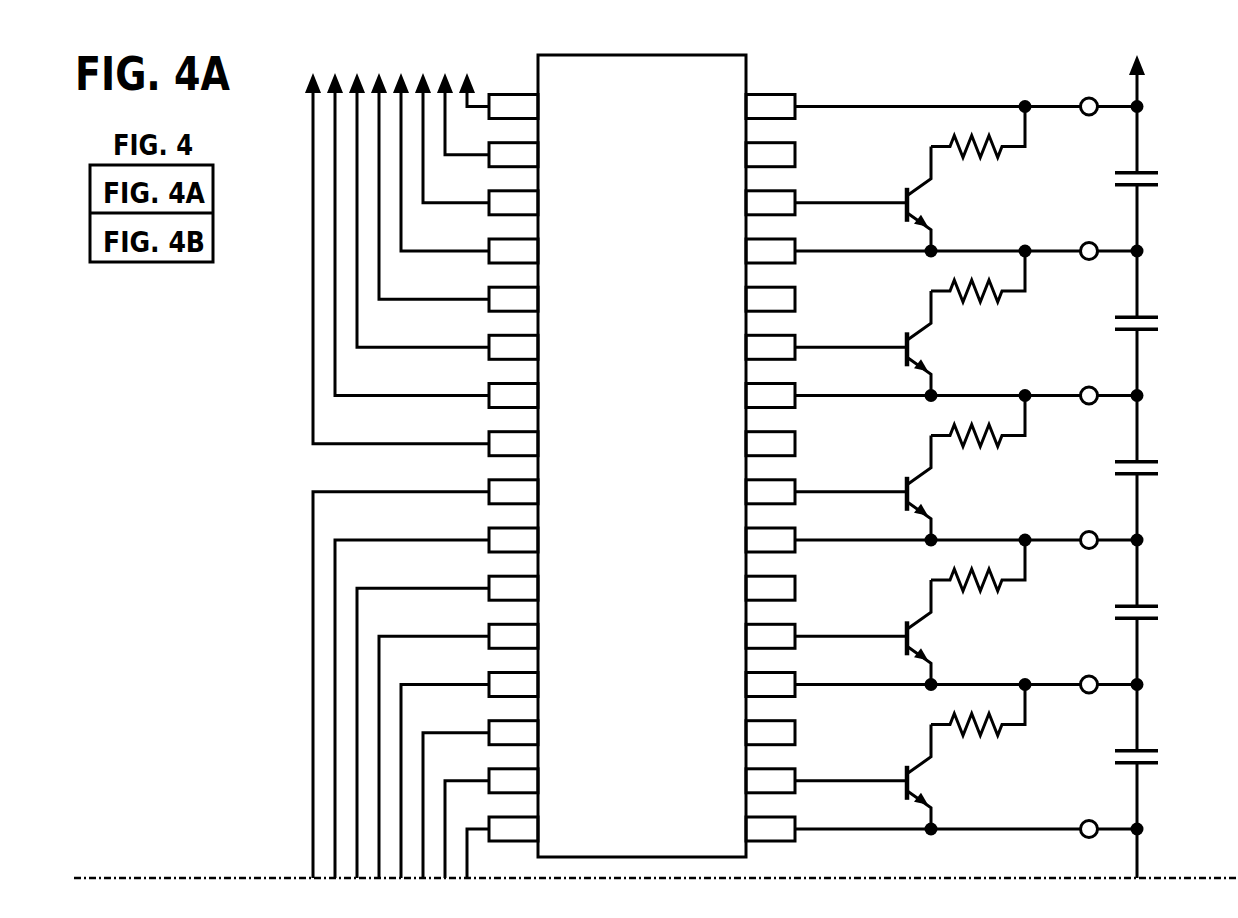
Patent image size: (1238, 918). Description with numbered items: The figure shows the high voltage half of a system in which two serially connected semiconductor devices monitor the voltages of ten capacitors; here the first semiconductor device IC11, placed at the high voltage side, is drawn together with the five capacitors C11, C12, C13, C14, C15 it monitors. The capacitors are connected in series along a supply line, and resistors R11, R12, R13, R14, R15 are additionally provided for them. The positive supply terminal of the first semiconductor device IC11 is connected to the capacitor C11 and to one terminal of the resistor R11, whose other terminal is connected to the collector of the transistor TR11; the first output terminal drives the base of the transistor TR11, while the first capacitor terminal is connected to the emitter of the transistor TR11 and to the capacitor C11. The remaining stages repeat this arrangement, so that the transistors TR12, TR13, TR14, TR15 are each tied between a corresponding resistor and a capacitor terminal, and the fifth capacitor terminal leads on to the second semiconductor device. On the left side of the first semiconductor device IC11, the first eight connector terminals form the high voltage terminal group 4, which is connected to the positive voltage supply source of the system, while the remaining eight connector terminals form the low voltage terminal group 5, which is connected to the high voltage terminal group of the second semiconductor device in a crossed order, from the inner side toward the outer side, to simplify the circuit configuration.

The high voltage terminal group 4 is at (266, 314).
The low voltage terminal group 5 is at (276, 624).
The first semiconductor device IC11 is at (642, 456).
The transistor TR11 is at (863, 199).
The transistor TR12 is at (863, 343).
The transistor TR13 is at (863, 488).
The transistor TR14 is at (863, 632).
The transistor TR15 is at (863, 777).
The resistor R11 is at (978, 146).
The resistor R12 is at (978, 290).
The resistor R13 is at (978, 435).
The resistor R14 is at (978, 579).
The resistor R15 is at (978, 724).
The capacitor C11 is at (1159, 180).
The capacitor C12 is at (1159, 324).
The capacitor C13 is at (1159, 469).
The capacitor C14 is at (1159, 613).
The capacitor C15 is at (1159, 758).